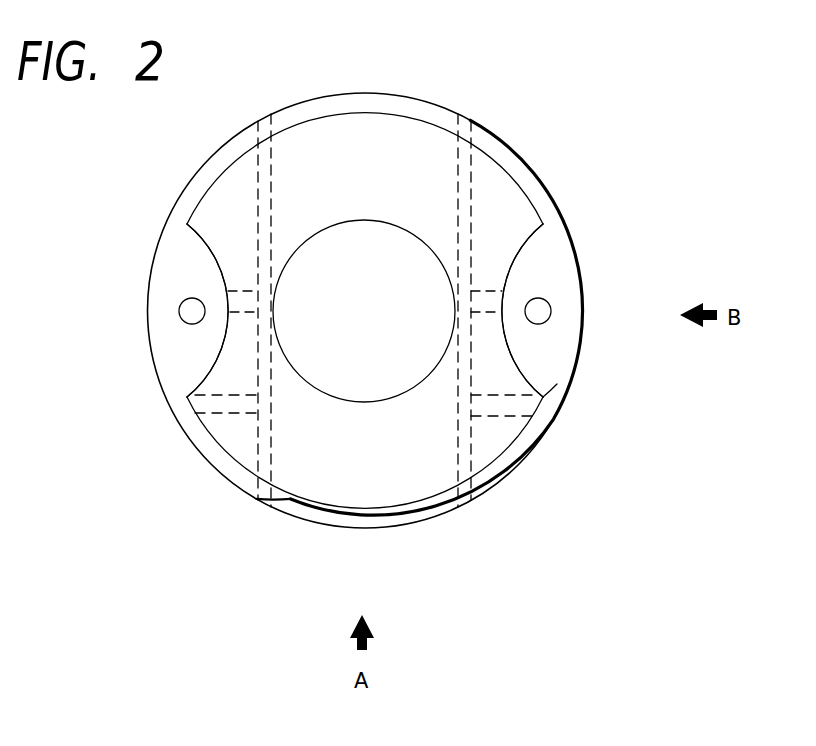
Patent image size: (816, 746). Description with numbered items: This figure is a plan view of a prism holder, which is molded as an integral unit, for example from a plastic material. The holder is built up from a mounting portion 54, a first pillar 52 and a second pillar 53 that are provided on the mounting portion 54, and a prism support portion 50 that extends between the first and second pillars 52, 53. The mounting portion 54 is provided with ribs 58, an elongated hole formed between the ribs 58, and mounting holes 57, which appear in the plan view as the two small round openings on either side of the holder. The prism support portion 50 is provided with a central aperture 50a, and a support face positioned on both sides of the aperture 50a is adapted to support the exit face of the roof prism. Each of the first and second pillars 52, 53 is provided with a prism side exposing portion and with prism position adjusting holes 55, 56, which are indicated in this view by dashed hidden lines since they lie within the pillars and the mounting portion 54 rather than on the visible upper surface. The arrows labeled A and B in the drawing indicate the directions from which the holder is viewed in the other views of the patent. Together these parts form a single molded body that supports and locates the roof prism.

The ribs 58 is at (378, 101).
The prism support portion 50 is at (432, 197).
The aperture 50a is at (417, 275).
The prism position adjusting hole 56 is at (513, 293).
The mounting holes 57 is at (179, 310).
The first pillar 52 is at (553, 375).
The second pillar 53 is at (210, 380).
The mounting portion 54 is at (508, 383).
The prism position adjusting hole 55 is at (538, 418).